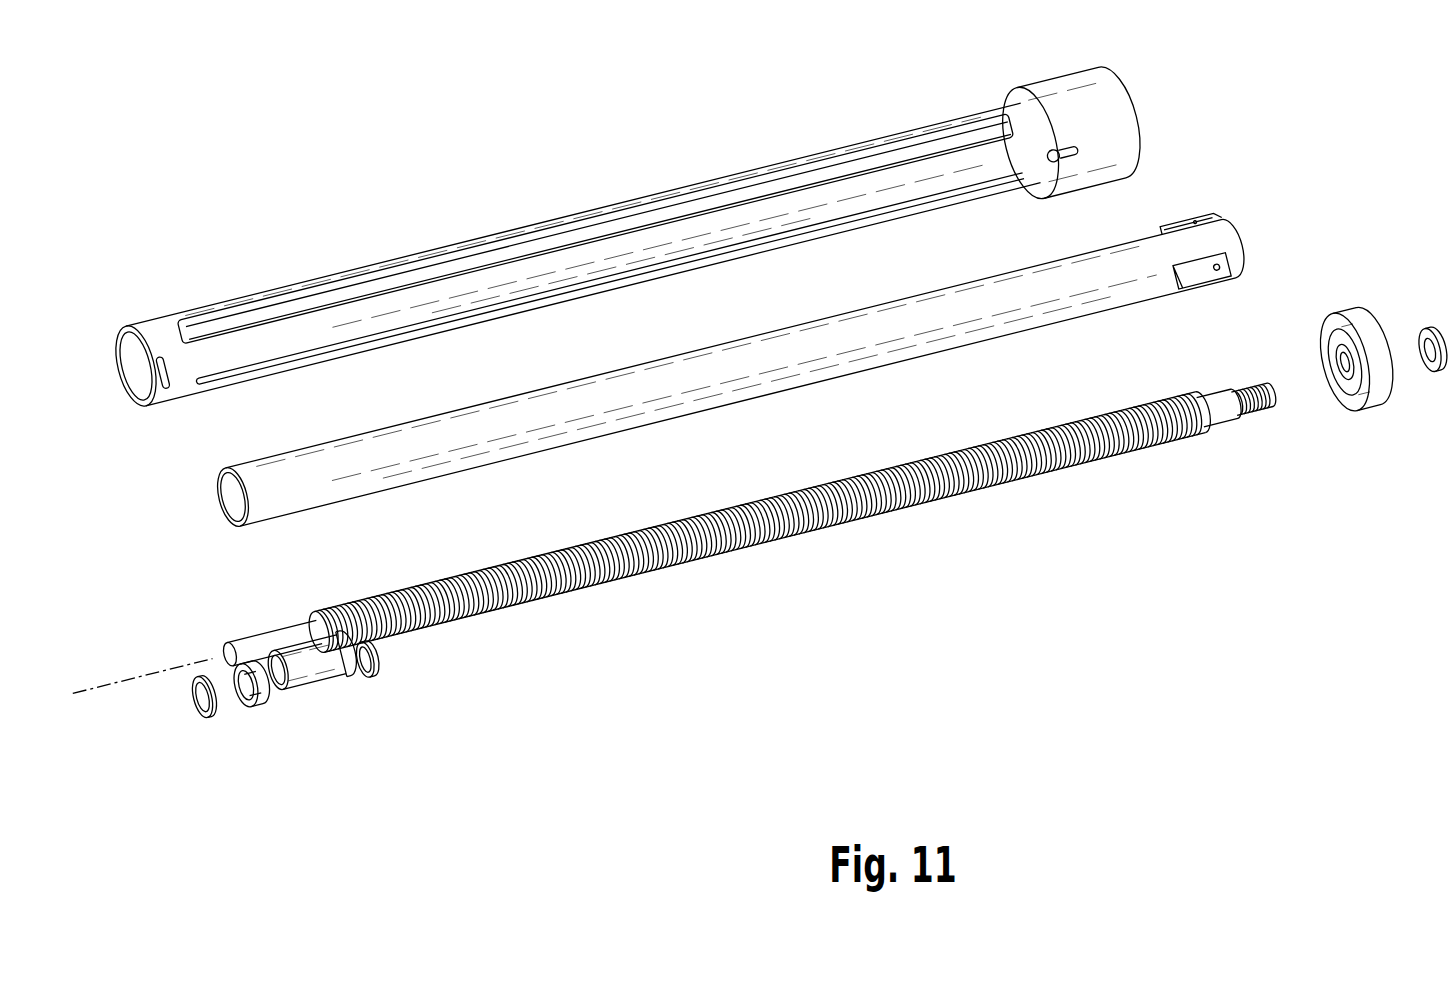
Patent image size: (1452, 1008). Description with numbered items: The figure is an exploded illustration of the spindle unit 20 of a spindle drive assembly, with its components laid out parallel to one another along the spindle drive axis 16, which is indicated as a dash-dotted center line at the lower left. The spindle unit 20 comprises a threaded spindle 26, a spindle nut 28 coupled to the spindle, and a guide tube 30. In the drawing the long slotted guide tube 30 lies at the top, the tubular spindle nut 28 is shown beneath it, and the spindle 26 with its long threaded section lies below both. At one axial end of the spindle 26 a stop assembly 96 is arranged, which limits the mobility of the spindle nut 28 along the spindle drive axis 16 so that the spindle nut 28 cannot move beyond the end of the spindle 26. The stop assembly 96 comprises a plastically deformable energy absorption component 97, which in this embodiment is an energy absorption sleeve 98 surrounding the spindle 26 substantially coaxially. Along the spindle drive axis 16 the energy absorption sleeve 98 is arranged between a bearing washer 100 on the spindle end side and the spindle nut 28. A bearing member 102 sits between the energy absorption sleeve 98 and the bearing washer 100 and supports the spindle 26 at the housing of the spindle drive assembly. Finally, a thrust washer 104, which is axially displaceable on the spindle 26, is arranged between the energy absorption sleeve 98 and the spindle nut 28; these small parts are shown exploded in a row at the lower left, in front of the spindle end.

The spindle drive axis 16 is at (122, 680).
The spindle unit 20 is at (618, 213).
The spindle 26 is at (857, 517).
The spindle nut 28 is at (1221, 189).
The guide tube 30 is at (923, 131).
The stop assembly 96 is at (297, 722).
The plastically deformable energy absorption component 97 is at (319, 722).
The energy absorption sleeve 98 is at (316, 660).
The bearing washer 100 is at (197, 718).
The bearing member 102 is at (258, 706).
The thrust washer 104 is at (380, 657).